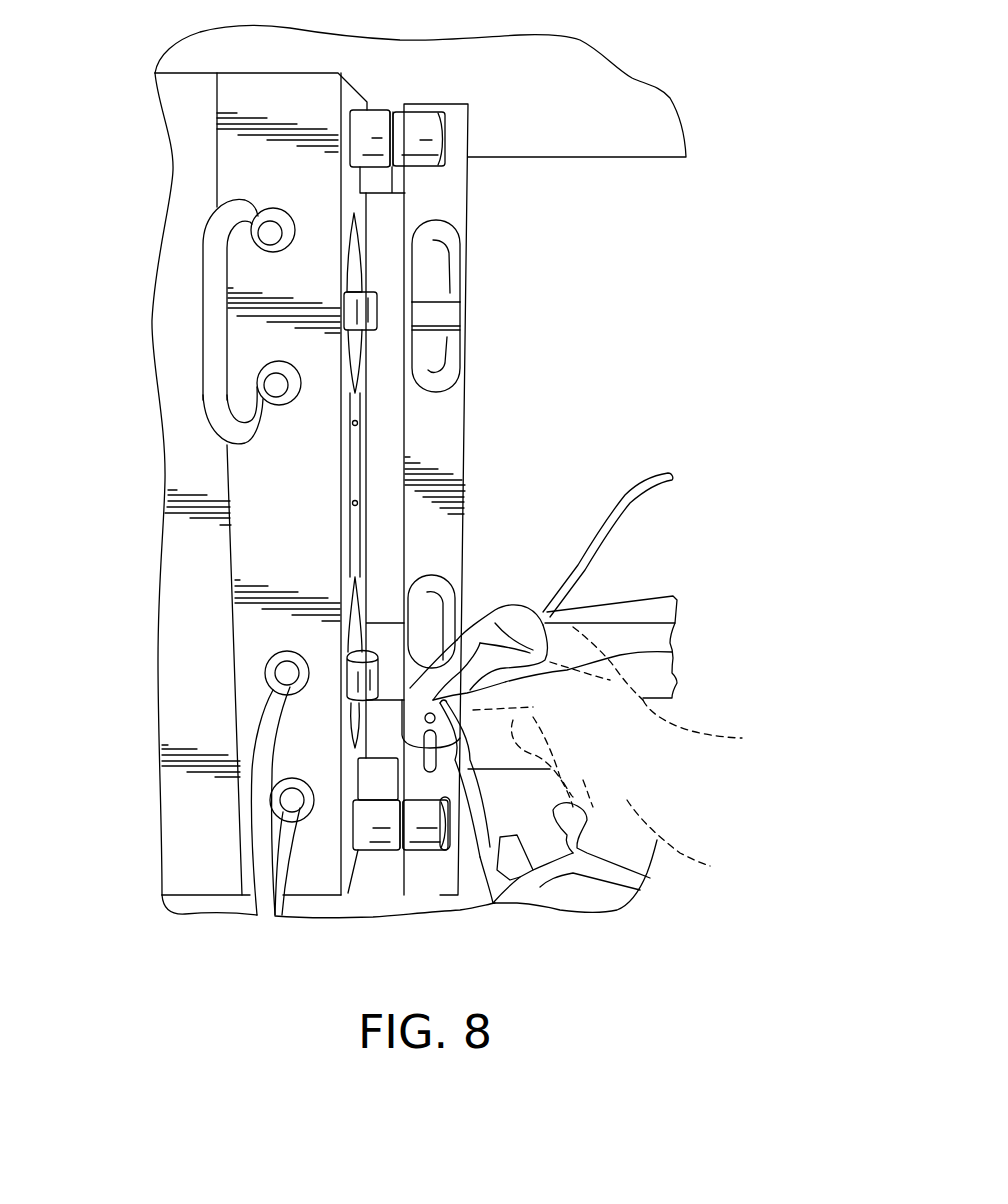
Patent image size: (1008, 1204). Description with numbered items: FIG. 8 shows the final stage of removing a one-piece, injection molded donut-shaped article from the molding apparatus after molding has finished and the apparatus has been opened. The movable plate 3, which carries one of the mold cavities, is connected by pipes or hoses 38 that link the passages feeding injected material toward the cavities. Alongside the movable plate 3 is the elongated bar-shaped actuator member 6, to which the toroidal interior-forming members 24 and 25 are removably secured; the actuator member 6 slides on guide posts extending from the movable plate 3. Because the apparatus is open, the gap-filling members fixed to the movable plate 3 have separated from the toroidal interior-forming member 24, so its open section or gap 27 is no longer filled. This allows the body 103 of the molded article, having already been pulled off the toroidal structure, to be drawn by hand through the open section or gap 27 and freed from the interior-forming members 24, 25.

The movable plate 3 is at (243, 170).
The pipes or hoses 38 is at (213, 327).
The actuator member 6 is at (445, 433).
The interior-forming member 24 is at (437, 268).
The open section or gap 27 is at (438, 318).
The interior-forming member 25 is at (448, 590).
The body 103 is at (672, 652).